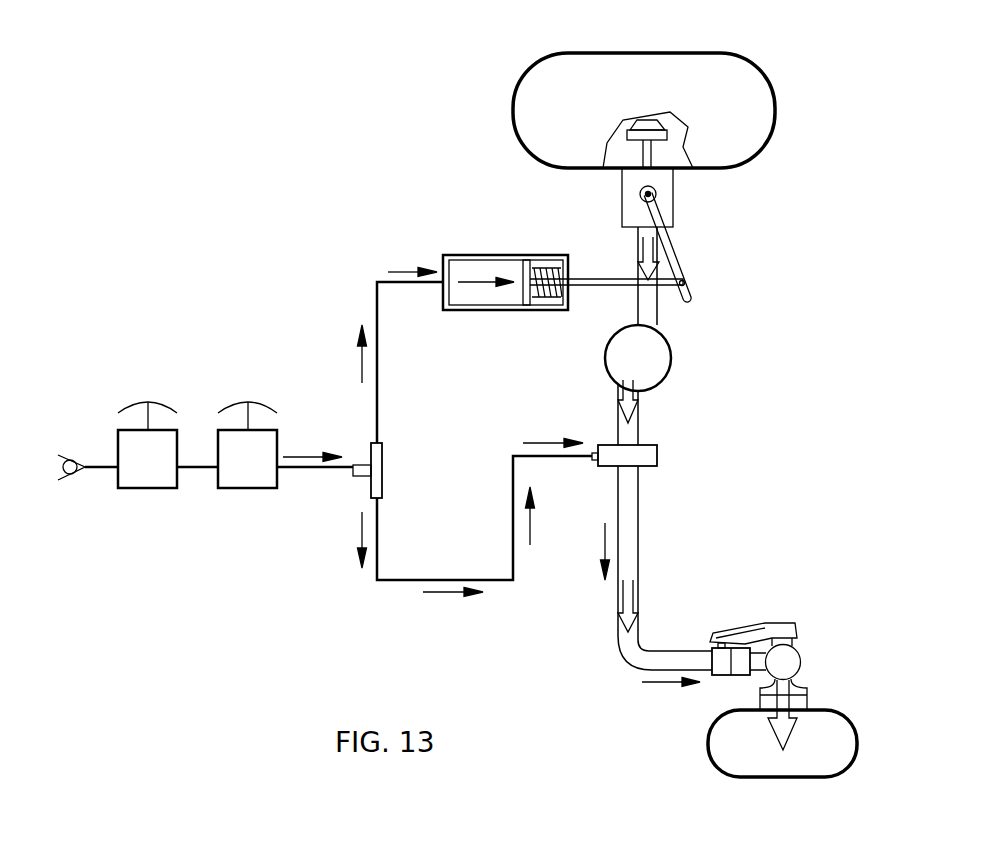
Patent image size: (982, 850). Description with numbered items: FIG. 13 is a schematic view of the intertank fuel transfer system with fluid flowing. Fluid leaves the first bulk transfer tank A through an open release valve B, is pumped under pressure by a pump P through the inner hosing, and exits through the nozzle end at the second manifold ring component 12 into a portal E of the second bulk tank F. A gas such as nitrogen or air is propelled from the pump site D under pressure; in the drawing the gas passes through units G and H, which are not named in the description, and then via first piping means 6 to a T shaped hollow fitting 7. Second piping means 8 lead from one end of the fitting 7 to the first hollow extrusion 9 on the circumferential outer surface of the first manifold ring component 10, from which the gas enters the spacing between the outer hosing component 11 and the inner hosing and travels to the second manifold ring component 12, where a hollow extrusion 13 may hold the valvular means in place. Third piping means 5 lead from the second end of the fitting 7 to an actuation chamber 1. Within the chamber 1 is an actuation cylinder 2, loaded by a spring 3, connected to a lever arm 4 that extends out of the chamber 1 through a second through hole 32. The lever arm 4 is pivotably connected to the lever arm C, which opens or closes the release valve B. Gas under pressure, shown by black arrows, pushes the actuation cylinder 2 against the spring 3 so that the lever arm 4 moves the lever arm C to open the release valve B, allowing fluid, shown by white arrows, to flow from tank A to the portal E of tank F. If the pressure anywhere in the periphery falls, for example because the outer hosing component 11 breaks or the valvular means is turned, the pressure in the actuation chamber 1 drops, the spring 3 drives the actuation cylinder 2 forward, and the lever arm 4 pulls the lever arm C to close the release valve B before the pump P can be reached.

The first bulk transfer tank A is at (645, 53).
The release valve B is at (643, 128).
The lever arm C is at (679, 268).
The pump D is at (60, 465).
The portal E is at (803, 663).
The second bulk tank F is at (837, 712).
The air filter unit G is at (135, 407).
The air pressure regulator unit H is at (232, 407).
The pump P is at (660, 359).
The actuation chamber 1 is at (462, 255).
The actuation cylinder 2 is at (530, 295).
The spring 3 is at (548, 298).
The second through hole 32 is at (574, 268).
The lever arm 4 is at (614, 279).
The third piping means 5 is at (377, 305).
The first piping means 6 is at (310, 468).
The T shaped hollow fitting 7 is at (383, 468).
The second piping means 8 is at (400, 580).
The first hollow extrusion 9 is at (592, 459).
The first manifold ring component 10 is at (647, 445).
The outer hosing component 11 is at (640, 522).
The second manifold ring component 12 is at (718, 678).
The hollow extrusion 13 is at (750, 632).